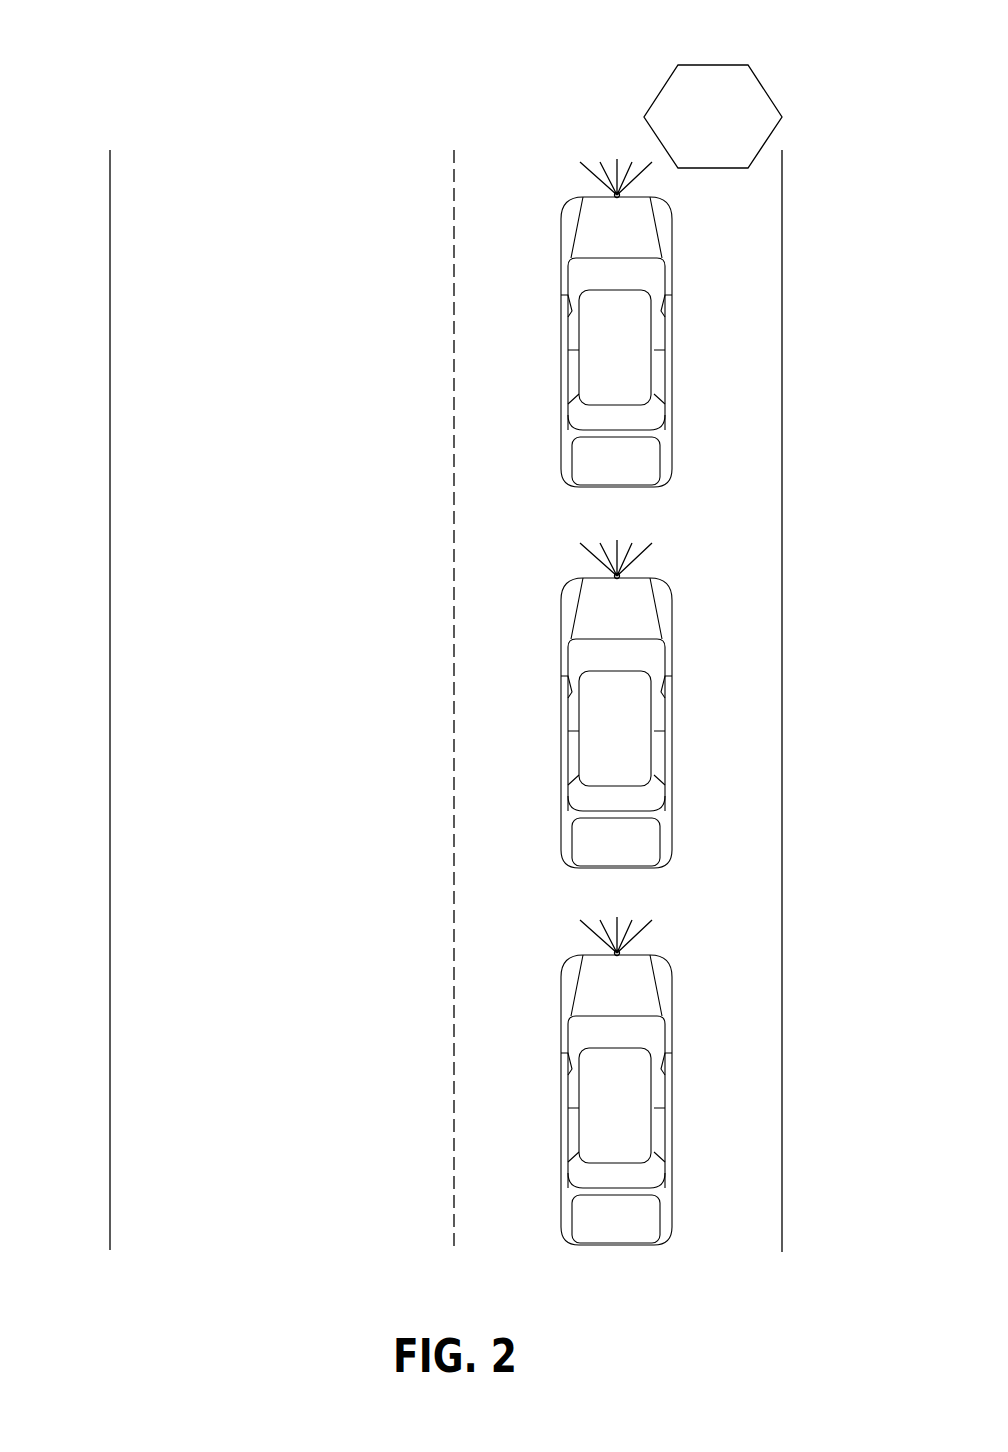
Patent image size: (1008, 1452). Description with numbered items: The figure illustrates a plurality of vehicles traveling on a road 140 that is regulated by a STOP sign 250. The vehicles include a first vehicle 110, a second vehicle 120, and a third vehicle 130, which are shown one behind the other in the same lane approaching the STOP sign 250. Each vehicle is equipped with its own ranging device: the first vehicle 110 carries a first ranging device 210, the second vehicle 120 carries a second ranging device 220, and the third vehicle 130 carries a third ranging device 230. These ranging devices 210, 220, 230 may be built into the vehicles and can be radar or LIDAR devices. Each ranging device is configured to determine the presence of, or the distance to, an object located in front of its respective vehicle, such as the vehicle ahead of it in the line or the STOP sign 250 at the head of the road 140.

The road 140 is at (287, 222).
The STOP sign 250 is at (713, 65).
The first vehicle 110 is at (562, 450).
The second vehicle 120 is at (562, 835).
The third vehicle 130 is at (563, 1213).
The first ranging device 210 is at (590, 182).
The second ranging device 220 is at (602, 562).
The third ranging device 230 is at (590, 930).